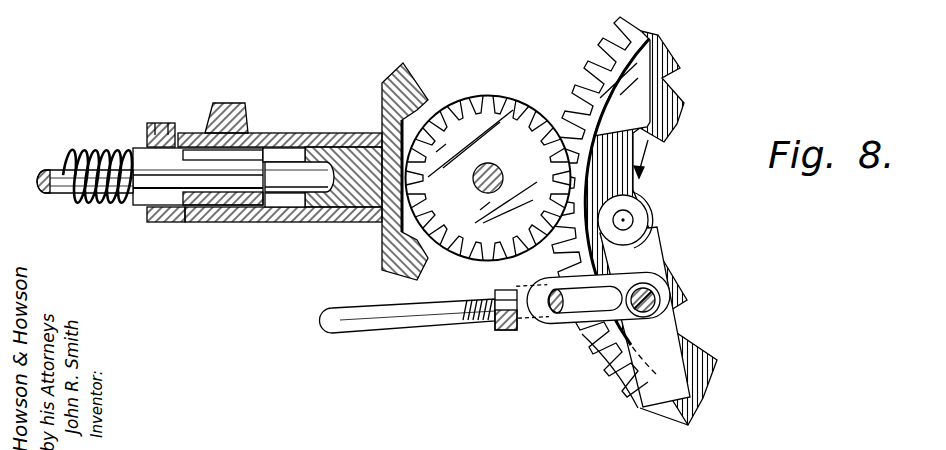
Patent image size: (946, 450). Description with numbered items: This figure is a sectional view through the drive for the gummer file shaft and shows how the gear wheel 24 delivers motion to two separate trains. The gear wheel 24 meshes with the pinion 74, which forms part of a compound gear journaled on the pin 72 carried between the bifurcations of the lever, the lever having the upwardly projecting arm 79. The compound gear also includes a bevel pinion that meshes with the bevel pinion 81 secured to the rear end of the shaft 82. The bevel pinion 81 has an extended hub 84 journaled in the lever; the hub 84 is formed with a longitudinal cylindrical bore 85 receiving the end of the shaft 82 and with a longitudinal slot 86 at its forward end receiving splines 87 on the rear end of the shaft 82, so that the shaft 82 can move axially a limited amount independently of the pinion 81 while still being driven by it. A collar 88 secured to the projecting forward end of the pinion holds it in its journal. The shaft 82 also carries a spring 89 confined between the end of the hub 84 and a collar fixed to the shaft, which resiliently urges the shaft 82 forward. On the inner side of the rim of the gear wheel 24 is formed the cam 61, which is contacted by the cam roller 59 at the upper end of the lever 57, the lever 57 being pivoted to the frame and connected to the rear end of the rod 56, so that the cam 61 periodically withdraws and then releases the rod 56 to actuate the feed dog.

The gear wheel 24 is at (650, 42).
The rod 56 is at (413, 322).
The lever 57 is at (664, 326).
The cam roller 59 is at (653, 221).
The cam 61 is at (586, 188).
The pin 72 is at (504, 171).
The pinion 74 is at (492, 99).
The upwardly projecting arm 79 is at (227, 104).
The bevel pinion 81 is at (382, 96).
The shaft 82 is at (59, 196).
The extended hub 84 is at (325, 200).
The longitudinal cylindrical bore 85 is at (286, 195).
The longitudinal slot 86 is at (274, 149).
The splines 87 is at (210, 207).
The collar 88 is at (151, 223).
The spring 89 is at (75, 153).